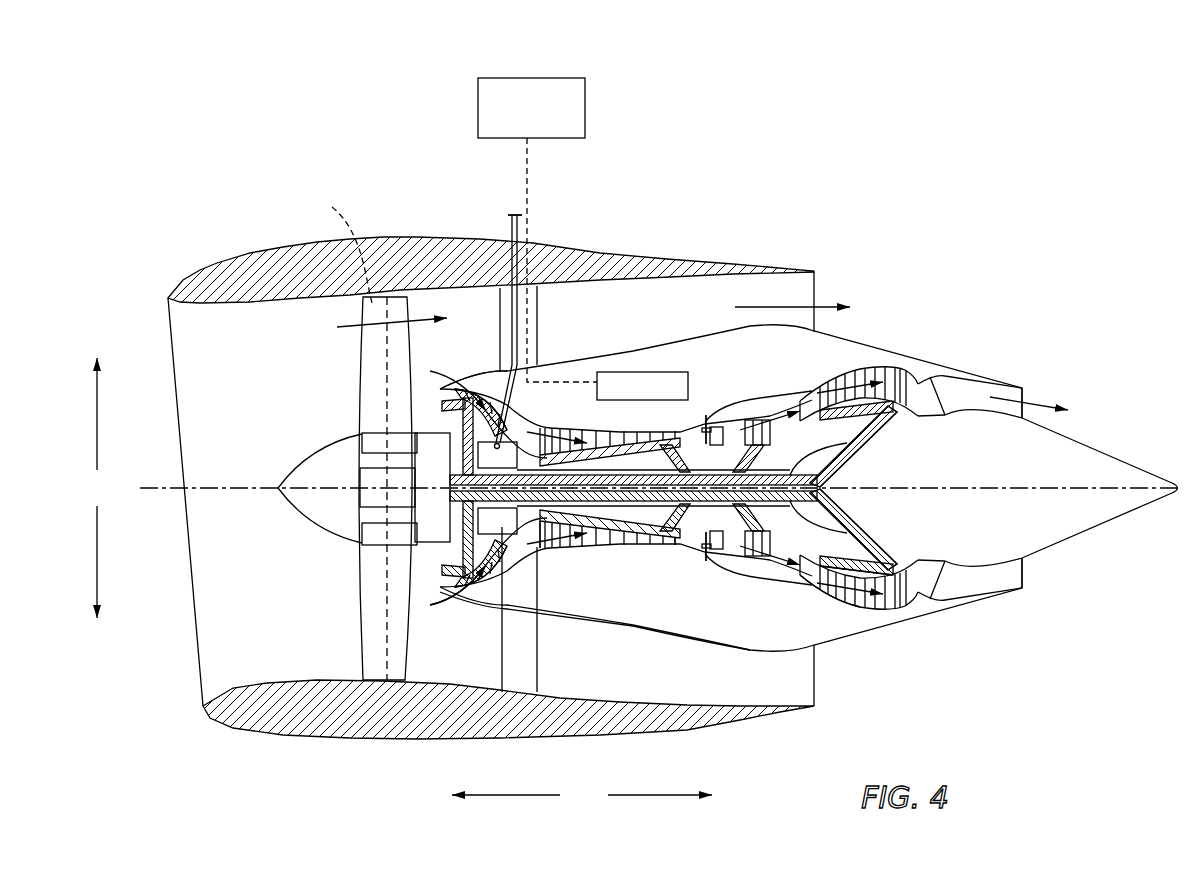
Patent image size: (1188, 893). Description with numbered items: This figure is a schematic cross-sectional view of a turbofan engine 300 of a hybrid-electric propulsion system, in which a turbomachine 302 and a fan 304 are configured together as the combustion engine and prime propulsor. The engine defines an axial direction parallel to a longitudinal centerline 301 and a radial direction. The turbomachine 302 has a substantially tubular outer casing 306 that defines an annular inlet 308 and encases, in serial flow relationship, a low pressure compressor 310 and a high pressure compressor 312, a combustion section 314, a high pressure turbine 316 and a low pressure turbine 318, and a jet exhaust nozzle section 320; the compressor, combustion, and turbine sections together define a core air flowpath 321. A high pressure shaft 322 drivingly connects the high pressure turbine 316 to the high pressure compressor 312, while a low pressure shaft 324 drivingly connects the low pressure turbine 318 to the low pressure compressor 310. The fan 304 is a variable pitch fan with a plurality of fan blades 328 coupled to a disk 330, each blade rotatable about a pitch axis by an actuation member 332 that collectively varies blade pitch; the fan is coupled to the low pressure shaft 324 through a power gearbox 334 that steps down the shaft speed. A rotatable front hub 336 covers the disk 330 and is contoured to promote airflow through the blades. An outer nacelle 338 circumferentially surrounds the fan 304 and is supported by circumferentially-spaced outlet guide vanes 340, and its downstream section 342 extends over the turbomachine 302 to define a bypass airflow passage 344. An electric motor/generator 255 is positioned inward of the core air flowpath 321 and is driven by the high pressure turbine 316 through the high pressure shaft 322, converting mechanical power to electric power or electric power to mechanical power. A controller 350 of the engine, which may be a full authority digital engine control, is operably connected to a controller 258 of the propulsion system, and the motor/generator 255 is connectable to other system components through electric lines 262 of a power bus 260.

The electric motor/generator 255 is at (445, 588).
The controller 258 is at (515, 116).
The power bus 260 is at (497, 227).
The electric lines 262 is at (510, 217).
The turbofan engine 300 is at (898, 262).
The longitudinal centerline 301 is at (967, 488).
The turbomachine 302 is at (647, 327).
The fan 304 is at (278, 323).
The outer casing 306 is at (687, 641).
The annular inlet 308 is at (418, 600).
The low pressure compressor 310 is at (483, 600).
The high pressure compressor 312 is at (563, 545).
The combustion section 314 is at (723, 552).
The high pressure turbine 316 is at (790, 553).
The low pressure turbine 318 is at (890, 607).
The jet exhaust nozzle section 320 is at (945, 592).
The core air flowpath 321 is at (610, 430).
The high pressure shaft 322 is at (723, 443).
The low pressure shaft 324 is at (847, 441).
The fan blades 328 is at (360, 613).
The disk 330 is at (380, 447).
The actuation member 332 is at (360, 478).
The power gearbox 334 is at (443, 383).
The front hub 336 is at (288, 505).
The outer nacelle 338 is at (403, 740).
The outlet guide vanes 340 is at (538, 315).
The downstream section 342 is at (747, 257).
The bypass airflow passage 344 is at (673, 323).
The controller 350 is at (623, 399).